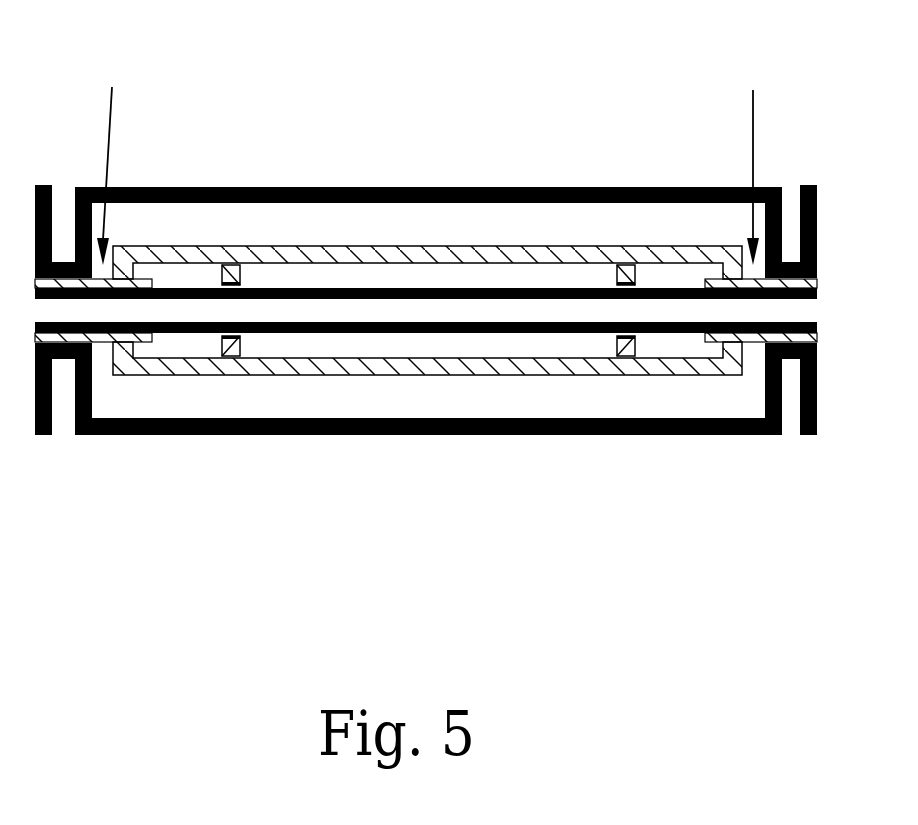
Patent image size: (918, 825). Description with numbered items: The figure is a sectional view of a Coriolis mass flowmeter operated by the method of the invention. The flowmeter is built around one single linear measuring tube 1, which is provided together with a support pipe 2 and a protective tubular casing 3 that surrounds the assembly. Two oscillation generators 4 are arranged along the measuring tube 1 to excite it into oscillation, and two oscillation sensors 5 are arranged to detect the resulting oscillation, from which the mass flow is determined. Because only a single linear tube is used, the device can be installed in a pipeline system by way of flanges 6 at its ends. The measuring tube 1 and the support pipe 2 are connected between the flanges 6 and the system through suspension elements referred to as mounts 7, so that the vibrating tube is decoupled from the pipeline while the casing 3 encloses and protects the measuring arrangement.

The measuring tube 1 is at (478, 290).
The support pipe 2 is at (382, 246).
The protective tubular casing 3 is at (323, 187).
The oscillation generators 4 is at (224, 265).
The oscillation sensors 5 is at (233, 340).
The flanges 6 is at (818, 213).
The mounts 7 is at (428, 157).